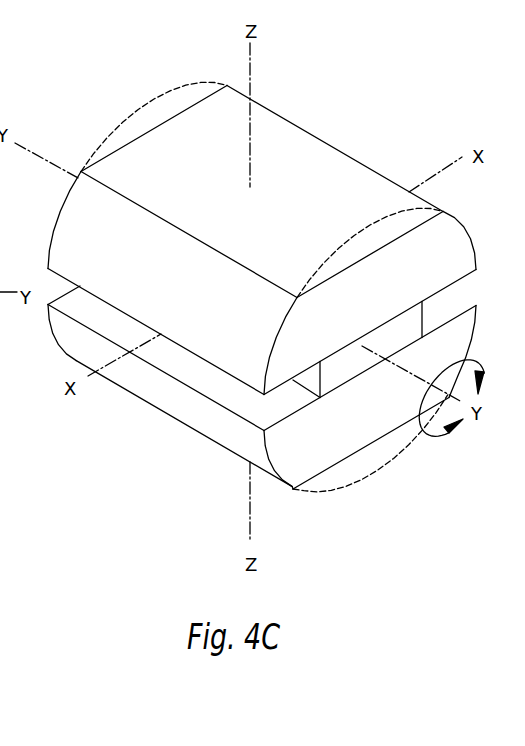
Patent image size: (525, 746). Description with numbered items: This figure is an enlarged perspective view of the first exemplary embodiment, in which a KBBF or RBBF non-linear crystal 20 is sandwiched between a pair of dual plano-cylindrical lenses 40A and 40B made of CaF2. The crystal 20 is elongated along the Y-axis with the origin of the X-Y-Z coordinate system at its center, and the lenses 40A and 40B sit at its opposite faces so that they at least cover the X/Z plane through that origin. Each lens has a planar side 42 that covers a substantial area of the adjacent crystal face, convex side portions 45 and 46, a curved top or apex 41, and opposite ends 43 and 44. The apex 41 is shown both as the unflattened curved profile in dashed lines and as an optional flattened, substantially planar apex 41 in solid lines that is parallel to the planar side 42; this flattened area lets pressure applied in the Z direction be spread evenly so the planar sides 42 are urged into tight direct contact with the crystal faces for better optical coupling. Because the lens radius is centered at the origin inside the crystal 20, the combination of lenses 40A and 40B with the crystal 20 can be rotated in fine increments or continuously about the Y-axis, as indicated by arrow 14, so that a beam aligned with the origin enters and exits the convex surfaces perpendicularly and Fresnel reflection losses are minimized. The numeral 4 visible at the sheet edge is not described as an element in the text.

The lens 40A is at (264, 232).
The lens 40B is at (190, 426).
The apex 41 is at (155, 97).
The planar side 42 is at (479, 272).
The end 43 is at (65, 202).
The end 44 is at (456, 236).
The convex side portion 45 is at (199, 297).
The convex side portion 46 is at (335, 148).
The non-linear crystal 20 is at (423, 320).
The arrow 14 is at (436, 432).
The section line 4 is at (4, 233).